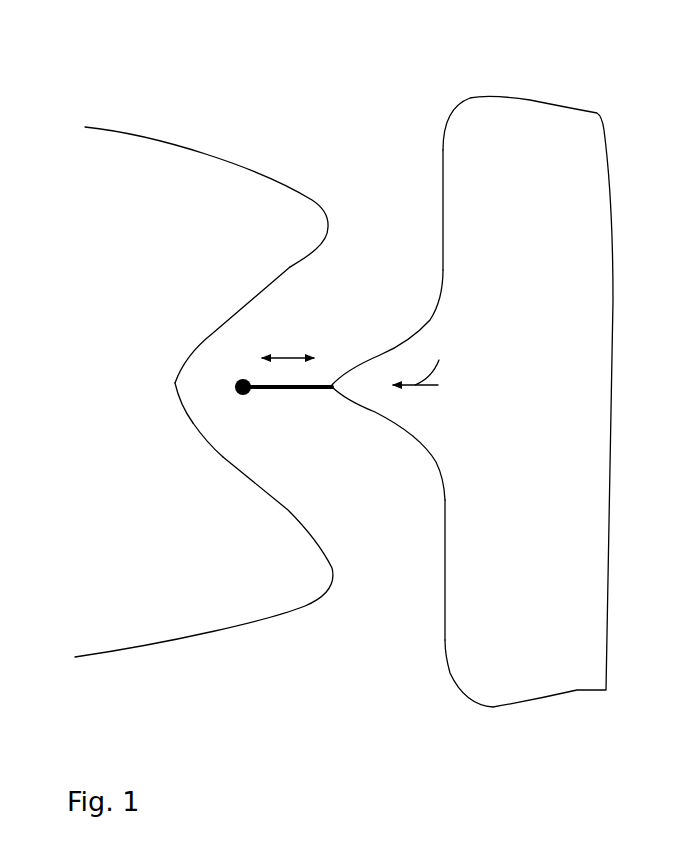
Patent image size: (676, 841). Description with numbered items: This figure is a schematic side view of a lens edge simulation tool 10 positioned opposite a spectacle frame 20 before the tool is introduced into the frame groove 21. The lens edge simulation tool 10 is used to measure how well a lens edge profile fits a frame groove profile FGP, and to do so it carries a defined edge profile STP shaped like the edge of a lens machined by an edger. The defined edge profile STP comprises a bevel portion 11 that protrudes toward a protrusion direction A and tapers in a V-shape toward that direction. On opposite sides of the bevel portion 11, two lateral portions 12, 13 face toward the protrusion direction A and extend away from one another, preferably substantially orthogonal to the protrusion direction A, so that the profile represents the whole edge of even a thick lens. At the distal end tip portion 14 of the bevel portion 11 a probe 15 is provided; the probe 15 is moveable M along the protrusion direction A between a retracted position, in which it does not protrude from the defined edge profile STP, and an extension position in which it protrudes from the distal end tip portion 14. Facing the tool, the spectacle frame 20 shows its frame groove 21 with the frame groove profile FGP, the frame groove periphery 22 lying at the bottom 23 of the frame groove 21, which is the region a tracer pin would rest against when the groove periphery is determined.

The lens edge simulation tool 10 is at (556, 97).
The bevel portion 11 is at (373, 390).
The lateral portion 12 is at (441, 570).
The lateral portion 13 is at (438, 249).
The distal end tip portion 14 is at (326, 394).
The probe 15 is at (235, 382).
The spectacle frame 20 is at (204, 138).
The frame groove 21 is at (306, 281).
The frame groove periphery 22 is at (180, 393).
The bottom 23 is at (184, 383).
The defined edge profile STP is at (405, 339).
The movement of the probe M is at (285, 357).
The protrusion direction A is at (419, 358).
The frame groove profile FGP is at (294, 504).